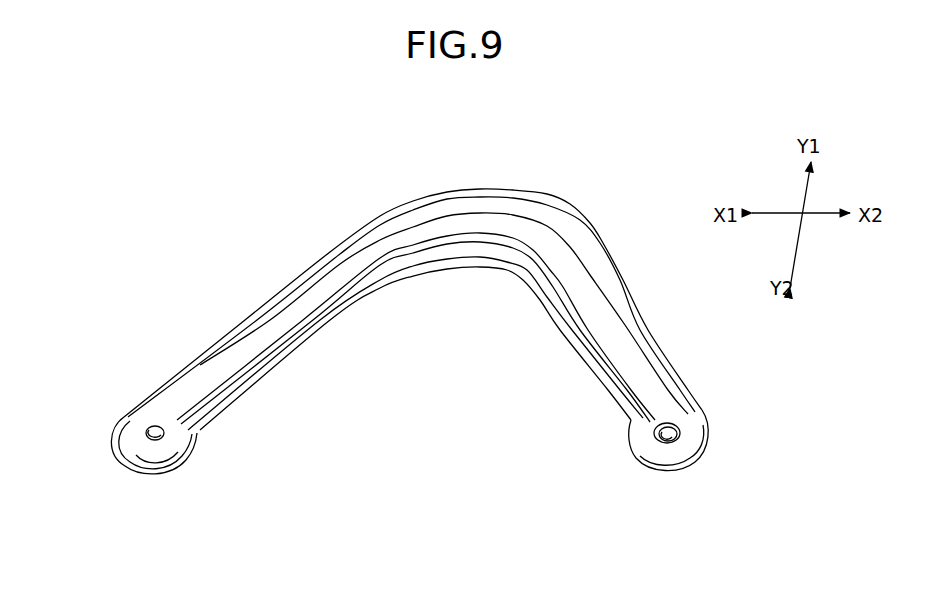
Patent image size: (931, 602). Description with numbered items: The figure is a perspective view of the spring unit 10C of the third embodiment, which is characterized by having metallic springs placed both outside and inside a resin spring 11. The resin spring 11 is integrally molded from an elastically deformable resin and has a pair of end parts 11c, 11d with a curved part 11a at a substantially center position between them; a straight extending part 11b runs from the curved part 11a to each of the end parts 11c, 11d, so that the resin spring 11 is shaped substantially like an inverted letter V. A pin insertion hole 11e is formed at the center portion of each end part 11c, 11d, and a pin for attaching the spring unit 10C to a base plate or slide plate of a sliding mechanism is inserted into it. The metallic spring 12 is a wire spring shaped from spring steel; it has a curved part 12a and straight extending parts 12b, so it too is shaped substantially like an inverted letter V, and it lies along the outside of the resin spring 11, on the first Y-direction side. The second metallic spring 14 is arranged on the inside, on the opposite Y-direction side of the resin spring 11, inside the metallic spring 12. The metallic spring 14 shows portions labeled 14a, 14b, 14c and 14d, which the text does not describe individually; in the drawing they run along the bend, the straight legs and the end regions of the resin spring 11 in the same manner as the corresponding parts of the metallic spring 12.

The spring unit 10C is at (286, 117).
The resin spring 11 is at (561, 244).
The curved part 11a is at (492, 228).
The extending part 11b is at (343, 287).
The end part 11c is at (117, 432).
The end part 11d is at (675, 448).
The pin insertion hole 11e is at (155, 427).
The metallic spring 12 is at (551, 196).
The curved part 12a is at (482, 190).
The extending part 12b is at (278, 296).
The metallic spring 14 is at (544, 318).
The rib top portion 14a is at (507, 268).
The rib side portion 14b is at (597, 369).
The rib end portion at first boss 14c is at (152, 467).
The rib end portion at second boss 14d is at (663, 470).